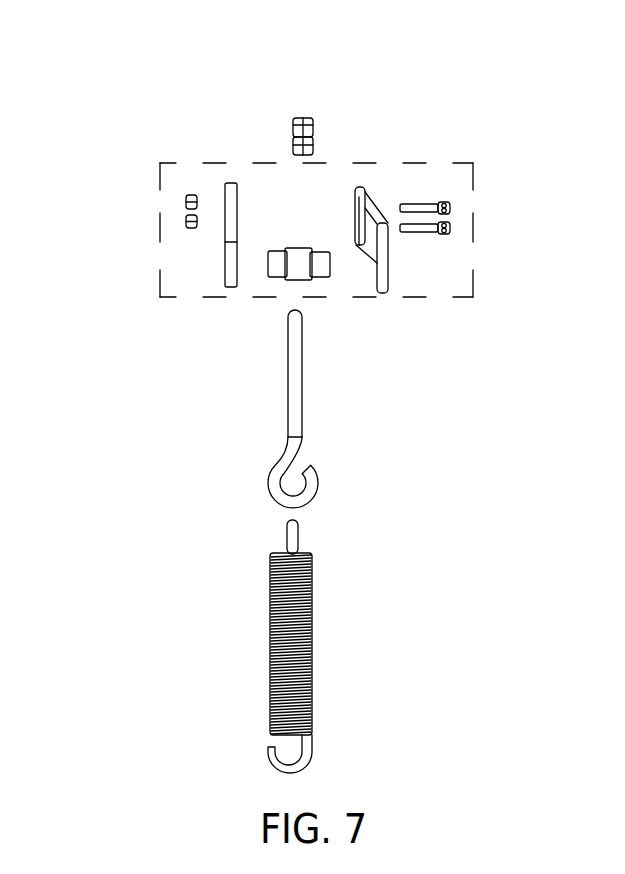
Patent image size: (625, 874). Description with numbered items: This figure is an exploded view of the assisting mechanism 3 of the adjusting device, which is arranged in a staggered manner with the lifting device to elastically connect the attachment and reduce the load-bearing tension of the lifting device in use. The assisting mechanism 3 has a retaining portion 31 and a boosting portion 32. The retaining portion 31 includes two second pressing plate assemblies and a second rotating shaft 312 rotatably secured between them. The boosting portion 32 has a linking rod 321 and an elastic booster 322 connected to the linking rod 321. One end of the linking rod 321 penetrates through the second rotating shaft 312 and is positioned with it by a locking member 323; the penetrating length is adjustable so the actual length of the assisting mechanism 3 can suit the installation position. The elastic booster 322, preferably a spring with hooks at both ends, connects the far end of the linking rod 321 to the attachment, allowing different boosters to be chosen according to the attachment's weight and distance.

The assisting mechanism 3 is at (79, 45).
The retaining portion 31 is at (468, 173).
The second rotating shaft 312 is at (303, 272).
The locking member 323 is at (313, 127).
The boosting portion 32 is at (243, 612).
The linking rod 321 is at (295, 403).
The elastic booster 322 is at (312, 657).